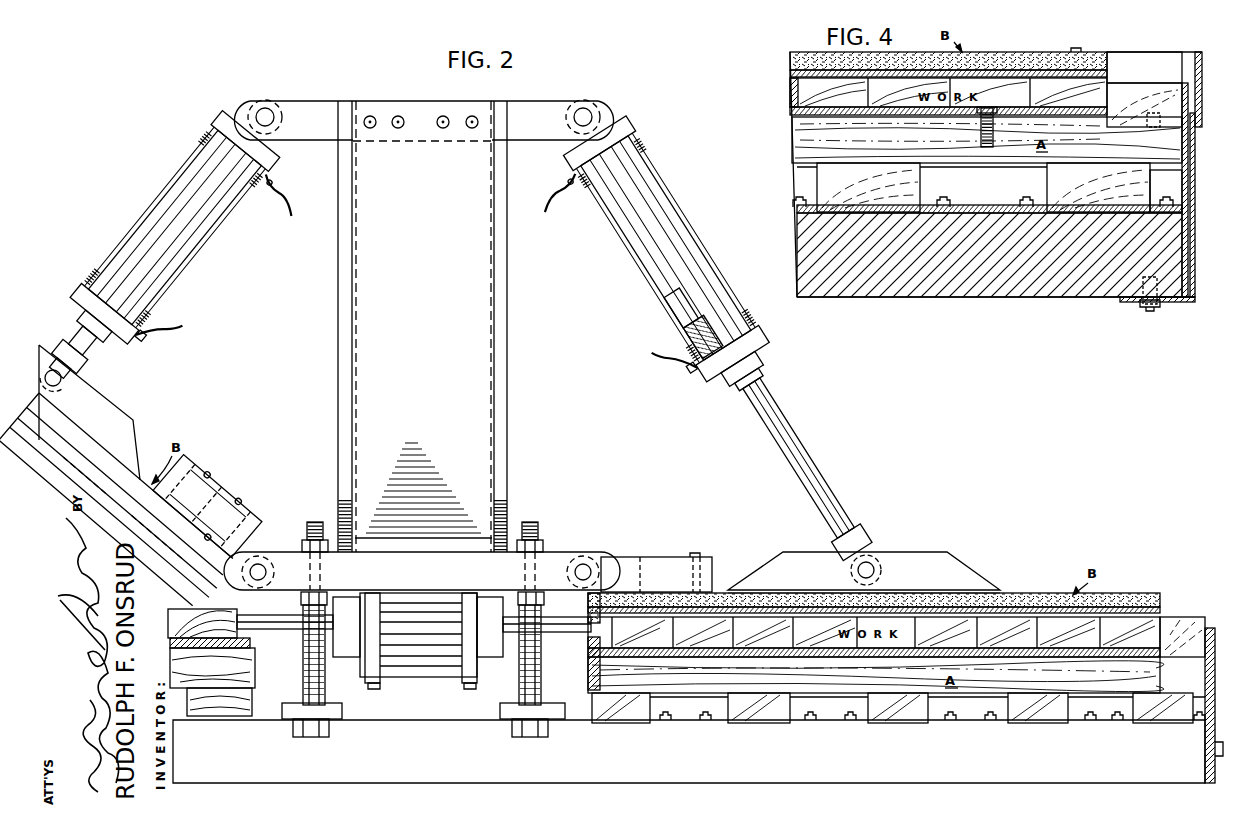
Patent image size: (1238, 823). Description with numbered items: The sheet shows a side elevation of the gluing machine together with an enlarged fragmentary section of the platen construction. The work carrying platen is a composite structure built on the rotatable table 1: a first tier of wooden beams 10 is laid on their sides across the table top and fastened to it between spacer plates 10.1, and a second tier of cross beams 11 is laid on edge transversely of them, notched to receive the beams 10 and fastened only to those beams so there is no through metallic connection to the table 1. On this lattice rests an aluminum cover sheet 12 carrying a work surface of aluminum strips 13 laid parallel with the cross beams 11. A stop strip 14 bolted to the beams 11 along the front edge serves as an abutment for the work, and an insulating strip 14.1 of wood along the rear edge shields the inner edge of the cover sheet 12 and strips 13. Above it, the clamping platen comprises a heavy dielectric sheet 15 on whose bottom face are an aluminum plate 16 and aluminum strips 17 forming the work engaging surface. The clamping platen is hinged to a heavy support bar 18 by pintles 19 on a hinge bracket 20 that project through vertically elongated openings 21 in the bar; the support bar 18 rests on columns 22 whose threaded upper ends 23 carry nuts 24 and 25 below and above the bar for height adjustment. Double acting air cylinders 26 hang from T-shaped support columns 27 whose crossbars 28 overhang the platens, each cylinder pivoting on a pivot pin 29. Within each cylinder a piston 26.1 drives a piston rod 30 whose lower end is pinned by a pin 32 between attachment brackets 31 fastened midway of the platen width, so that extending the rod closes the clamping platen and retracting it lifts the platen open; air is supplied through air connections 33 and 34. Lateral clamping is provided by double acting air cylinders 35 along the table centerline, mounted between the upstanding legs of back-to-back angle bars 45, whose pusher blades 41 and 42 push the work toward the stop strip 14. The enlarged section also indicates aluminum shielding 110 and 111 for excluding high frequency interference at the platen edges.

In FIG. 2, the rotatable table 1 is at (1105, 778).
In FIG. 4, the rotatable table 1 is at (1014, 284).
In FIG. 2, the wooden beams 10 is at (908, 719).
In FIG. 4, the wooden beams 10 is at (921, 185).
In FIG. 2, the spacer plates 10.1 is at (703, 721).
In FIG. 4, the spacer plates 10.1 is at (990, 210).
In FIG. 2, the cross beams 11 is at (858, 671).
In FIG. 4, the cross beams 11 is at (985, 150).
In FIG. 2, the cover sheet 12 is at (1144, 658).
In FIG. 4, the cover sheet 12 is at (790, 121).
In FIG. 2, the aluminum strips 13 is at (1130, 658).
In FIG. 4, the aluminum strips 13 is at (790, 111).
In FIG. 2, the stop strip 14 is at (1183, 635).
In FIG. 4, the stop strip 14 is at (1147, 92).
In FIG. 2, the insulating strip 14.1 is at (250, 640).
In FIG. 2, the dielectric sheet 15 is at (1145, 597).
In FIG. 4, the dielectric sheet 15 is at (802, 58).
In FIG. 2, the aluminum plate 16 is at (1161, 609).
In FIG. 4, the aluminum plate 16 is at (790, 72).
In FIG. 2, the aluminum strips 17 is at (1160, 613).
In FIG. 4, the aluminum strips 17 is at (790, 80).
In FIG. 2, the support bar 18 is at (560, 556).
In FIG. 2, the pintles 19 is at (262, 563).
In FIG. 2, the hinge bracket 20 is at (210, 509).
In FIG. 2, the vertically elongated openings 21 is at (264, 590).
In FIG. 2, the columns 22 is at (544, 656).
In FIG. 2, the threaded upper end 23 is at (315, 521).
In FIG. 2, the nut 24 is at (545, 601).
In FIG. 2, the nut 25 is at (543, 543).
In FIG. 2, the air cylinders 26 is at (171, 222).
In FIG. 2, the piston 26.1 is at (700, 332).
In FIG. 2, the support columns 27 is at (491, 352).
In FIG. 2, the crossbars 28 is at (527, 106).
In FIG. 2, the pivot pin 29 is at (267, 107).
In FIG. 2, the piston rod 30 is at (96, 354).
In FIG. 2, the attachment brackets 31 is at (120, 428).
In FIG. 2, the pin 32 is at (50, 365).
In FIG. 2, the air connection 33 is at (283, 185).
In FIG. 2, the air connection 34 is at (158, 342).
In FIG. 2, the air cylinders 35 is at (412, 662).
In FIG. 2, the pusher blade 41 is at (562, 631).
In FIG. 2, the pusher blade 42 is at (270, 621).
In FIG. 2, the angle bars 45 is at (493, 701).
In FIG. 4, the shielding 110 is at (1201, 52).
In FIG. 4, the shielding 111 is at (1167, 297).